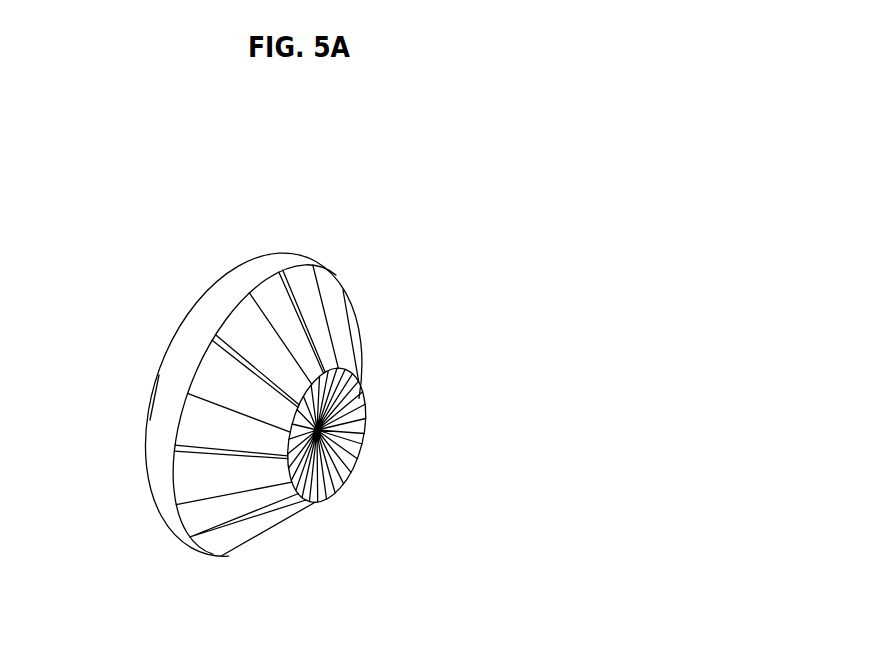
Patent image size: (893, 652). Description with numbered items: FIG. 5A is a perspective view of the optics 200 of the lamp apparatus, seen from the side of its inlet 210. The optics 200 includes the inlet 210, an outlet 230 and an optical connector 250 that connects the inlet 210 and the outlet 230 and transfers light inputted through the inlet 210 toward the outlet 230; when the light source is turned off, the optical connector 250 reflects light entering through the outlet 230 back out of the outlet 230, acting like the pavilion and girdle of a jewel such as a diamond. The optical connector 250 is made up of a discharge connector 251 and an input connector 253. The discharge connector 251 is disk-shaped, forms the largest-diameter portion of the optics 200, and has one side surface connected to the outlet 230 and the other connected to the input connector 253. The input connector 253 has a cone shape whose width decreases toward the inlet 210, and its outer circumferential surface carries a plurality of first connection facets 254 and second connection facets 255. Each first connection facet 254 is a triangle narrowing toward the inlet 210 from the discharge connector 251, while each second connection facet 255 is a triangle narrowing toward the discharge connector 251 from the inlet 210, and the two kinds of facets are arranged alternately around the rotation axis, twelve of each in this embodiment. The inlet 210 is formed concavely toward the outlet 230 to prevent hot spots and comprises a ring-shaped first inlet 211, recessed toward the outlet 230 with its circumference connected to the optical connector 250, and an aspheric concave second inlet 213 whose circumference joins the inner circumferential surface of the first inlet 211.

The optics 200 is at (513, 110).
The optical connector 250 is at (294, 240).
The discharge connector 251 is at (255, 272).
The input connector 253 is at (443, 264).
The first connection facet 254 is at (310, 295).
The second connection facet 255 is at (328, 360).
The outlet 230 is at (141, 354).
The inlet 210 is at (427, 504).
The first inlet 211 is at (322, 490).
The second inlet 213 is at (345, 449).